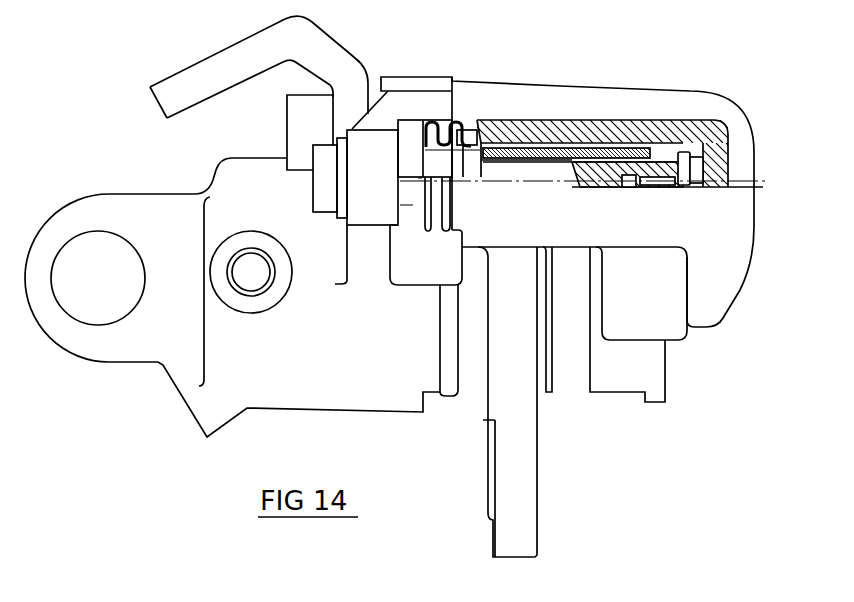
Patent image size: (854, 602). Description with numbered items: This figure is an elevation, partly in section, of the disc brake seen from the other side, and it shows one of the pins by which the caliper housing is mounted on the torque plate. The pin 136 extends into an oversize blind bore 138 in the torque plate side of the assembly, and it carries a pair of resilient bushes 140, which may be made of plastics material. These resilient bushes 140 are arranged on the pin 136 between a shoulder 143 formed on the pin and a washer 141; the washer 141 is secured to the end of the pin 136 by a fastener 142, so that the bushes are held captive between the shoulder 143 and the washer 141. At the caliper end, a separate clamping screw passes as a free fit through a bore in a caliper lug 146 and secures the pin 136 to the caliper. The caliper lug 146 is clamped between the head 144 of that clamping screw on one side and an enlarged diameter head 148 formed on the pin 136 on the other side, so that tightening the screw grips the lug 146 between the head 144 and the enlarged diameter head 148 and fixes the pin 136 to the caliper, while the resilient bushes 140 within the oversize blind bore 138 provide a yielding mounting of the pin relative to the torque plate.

The pin 136 is at (520, 172).
The oversize blind bore 138 is at (587, 145).
The resilient bushes 140 is at (630, 145).
The washer 141 is at (673, 160).
The fastener 142 is at (673, 183).
The shoulder 143 is at (483, 137).
The head of the clamping screw 144 is at (323, 163).
The caliper lug 146 is at (372, 153).
The enlarged diameter head 148 is at (467, 163).